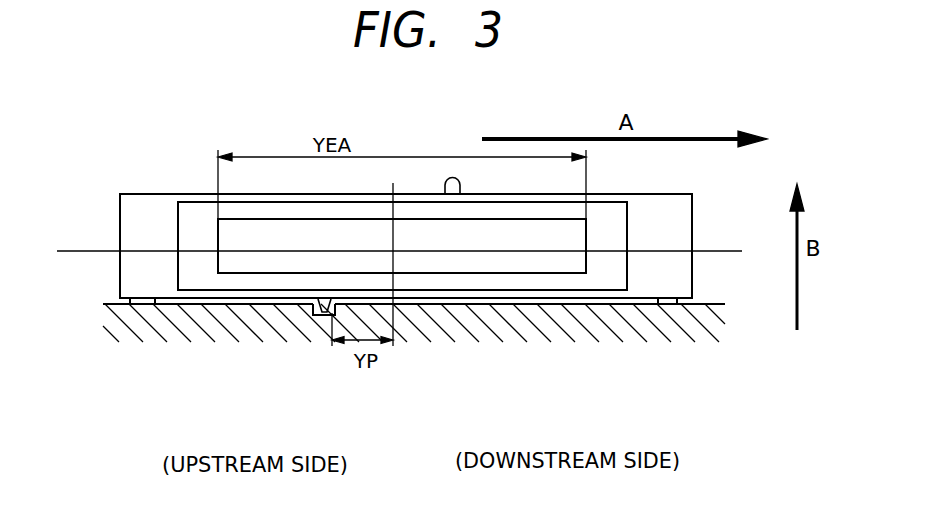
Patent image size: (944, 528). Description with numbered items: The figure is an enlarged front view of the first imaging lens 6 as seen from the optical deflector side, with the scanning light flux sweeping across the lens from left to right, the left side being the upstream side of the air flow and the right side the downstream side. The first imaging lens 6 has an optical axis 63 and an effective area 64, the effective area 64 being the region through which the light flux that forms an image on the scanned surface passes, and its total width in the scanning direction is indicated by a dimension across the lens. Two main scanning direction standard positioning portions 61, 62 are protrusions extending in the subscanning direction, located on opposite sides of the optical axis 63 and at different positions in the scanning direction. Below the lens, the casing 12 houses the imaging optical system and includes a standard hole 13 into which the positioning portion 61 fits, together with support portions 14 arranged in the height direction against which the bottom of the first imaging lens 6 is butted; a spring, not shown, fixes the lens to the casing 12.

The first imaging lens 6 is at (151, 210).
The casing 12 is at (482, 333).
The standard hole 13 is at (329, 314).
The support portions 14 is at (143, 306).
The main scanning direction standard positioning portion 61 is at (318, 316).
The main scanning direction standard positioning portion 62 is at (459, 178).
The optical axis 63 is at (394, 251).
The effective area 64 is at (263, 232).